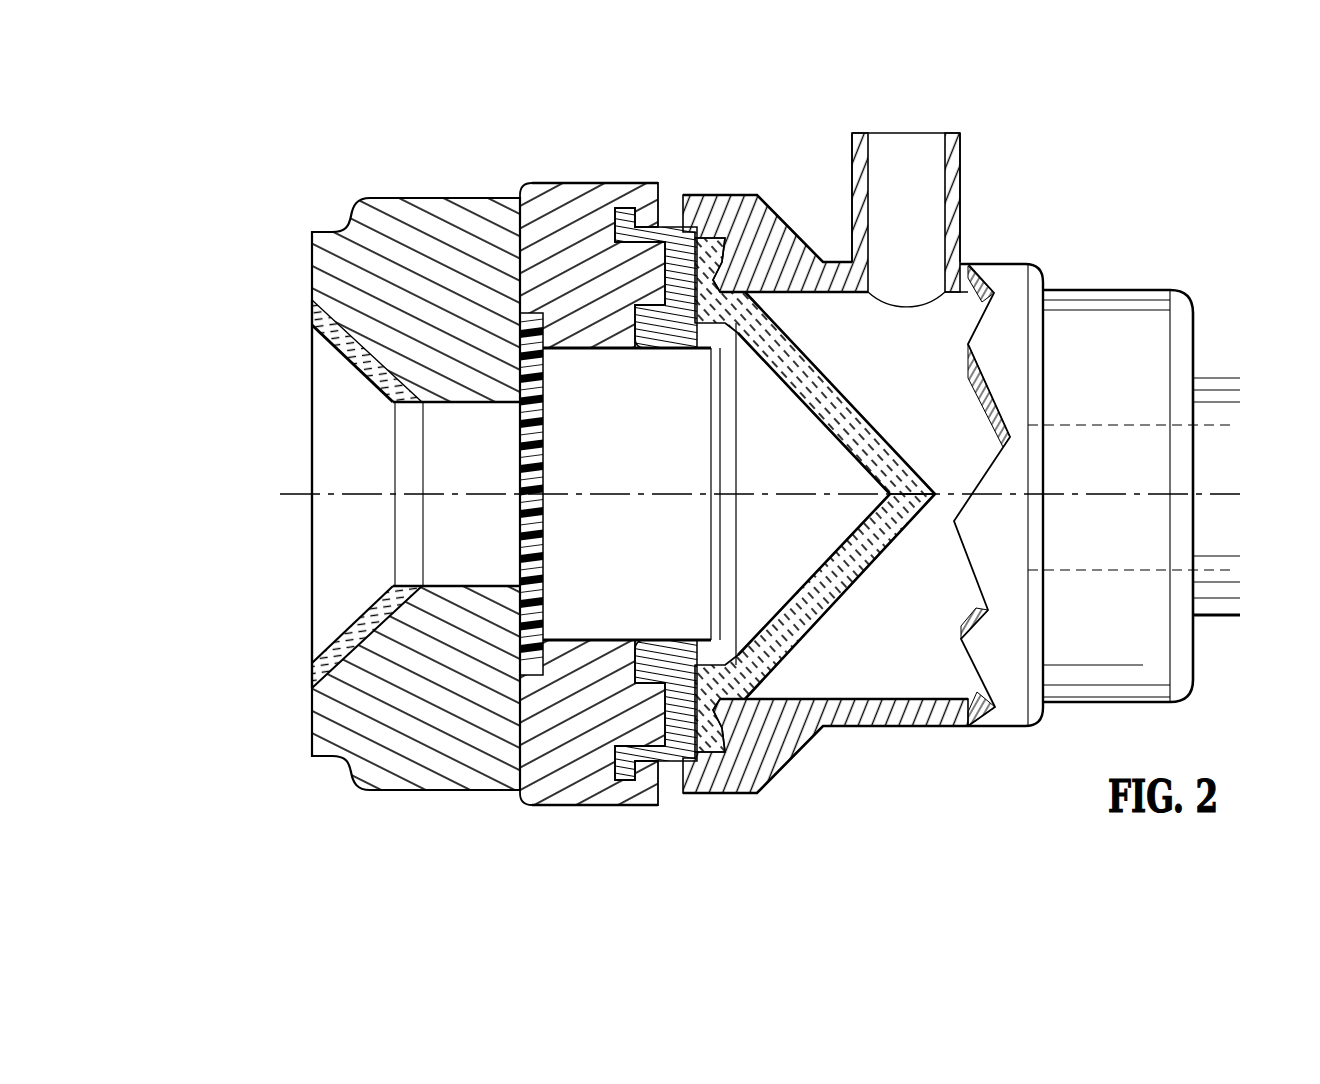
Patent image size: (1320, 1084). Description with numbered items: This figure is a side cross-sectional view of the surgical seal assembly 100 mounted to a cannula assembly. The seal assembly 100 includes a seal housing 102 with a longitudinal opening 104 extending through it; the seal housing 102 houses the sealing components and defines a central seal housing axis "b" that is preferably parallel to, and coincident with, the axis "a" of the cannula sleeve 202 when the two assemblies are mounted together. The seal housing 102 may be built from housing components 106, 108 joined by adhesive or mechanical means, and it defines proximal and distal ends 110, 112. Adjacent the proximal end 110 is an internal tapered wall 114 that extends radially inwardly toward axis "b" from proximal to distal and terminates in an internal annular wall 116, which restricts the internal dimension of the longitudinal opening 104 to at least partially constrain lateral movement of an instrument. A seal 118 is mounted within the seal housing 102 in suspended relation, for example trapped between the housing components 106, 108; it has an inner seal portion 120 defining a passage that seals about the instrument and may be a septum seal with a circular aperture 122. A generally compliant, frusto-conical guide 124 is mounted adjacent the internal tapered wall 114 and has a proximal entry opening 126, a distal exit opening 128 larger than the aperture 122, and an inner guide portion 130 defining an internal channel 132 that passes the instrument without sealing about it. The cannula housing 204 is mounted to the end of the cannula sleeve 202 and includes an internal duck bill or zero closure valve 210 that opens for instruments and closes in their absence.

The seal assembly 100 is at (450, 818).
The seal housing 102 is at (585, 502).
The longitudinal opening 104 is at (598, 440).
The housing component 106 is at (340, 512).
The housing component 108 is at (567, 730).
The proximal end 110 is at (340, 512).
The distal end 112 is at (660, 785).
The internal tapered wall 114 is at (347, 333).
The internal annular wall 116 is at (438, 400).
The seal 118 is at (591, 408).
The inner seal portion 120 is at (591, 408).
The circular aperture 122 is at (545, 392).
The compliant guide 124 is at (330, 350).
The proximal entry opening 126 is at (312, 374).
The distal exit opening 128 is at (415, 557).
The inner guide portion 130 is at (340, 632).
The internal channel 132 is at (345, 396).
The cannula sleeve 202 is at (1218, 410).
The cannula housing 204 is at (909, 717).
The zero closure valve 210 is at (770, 298).